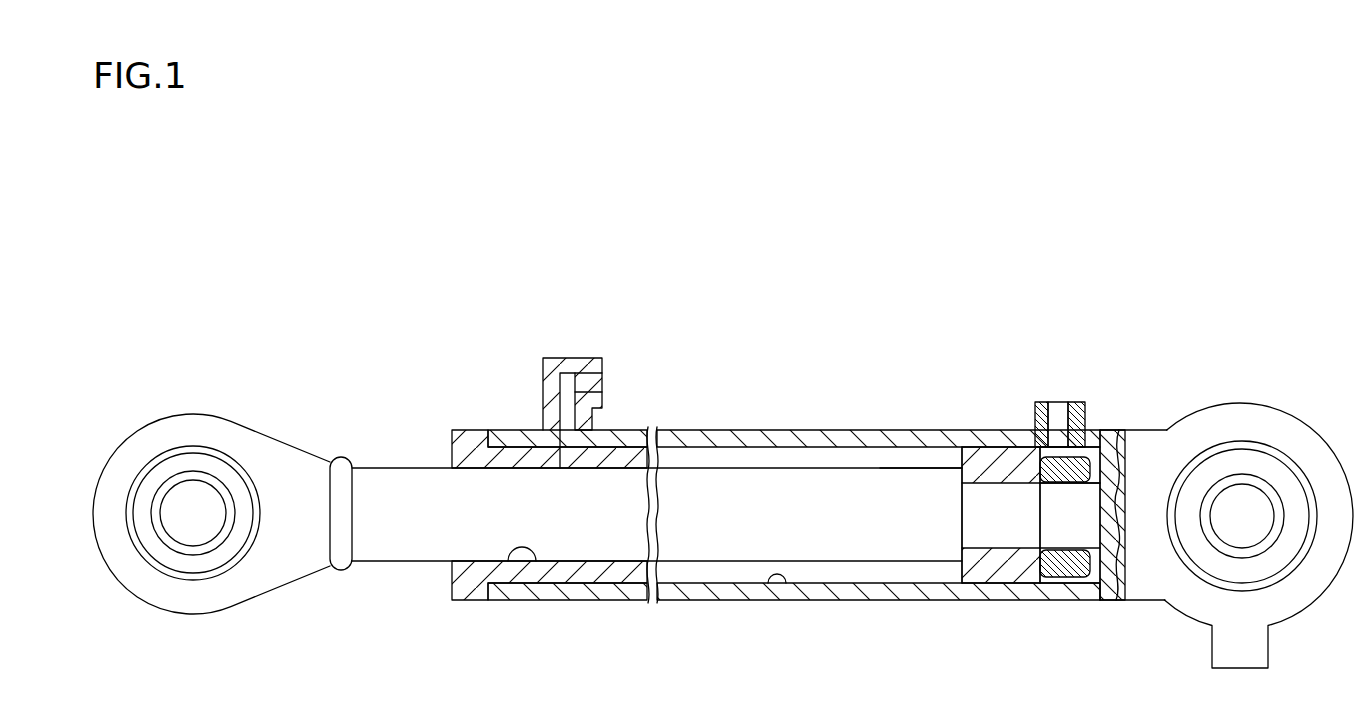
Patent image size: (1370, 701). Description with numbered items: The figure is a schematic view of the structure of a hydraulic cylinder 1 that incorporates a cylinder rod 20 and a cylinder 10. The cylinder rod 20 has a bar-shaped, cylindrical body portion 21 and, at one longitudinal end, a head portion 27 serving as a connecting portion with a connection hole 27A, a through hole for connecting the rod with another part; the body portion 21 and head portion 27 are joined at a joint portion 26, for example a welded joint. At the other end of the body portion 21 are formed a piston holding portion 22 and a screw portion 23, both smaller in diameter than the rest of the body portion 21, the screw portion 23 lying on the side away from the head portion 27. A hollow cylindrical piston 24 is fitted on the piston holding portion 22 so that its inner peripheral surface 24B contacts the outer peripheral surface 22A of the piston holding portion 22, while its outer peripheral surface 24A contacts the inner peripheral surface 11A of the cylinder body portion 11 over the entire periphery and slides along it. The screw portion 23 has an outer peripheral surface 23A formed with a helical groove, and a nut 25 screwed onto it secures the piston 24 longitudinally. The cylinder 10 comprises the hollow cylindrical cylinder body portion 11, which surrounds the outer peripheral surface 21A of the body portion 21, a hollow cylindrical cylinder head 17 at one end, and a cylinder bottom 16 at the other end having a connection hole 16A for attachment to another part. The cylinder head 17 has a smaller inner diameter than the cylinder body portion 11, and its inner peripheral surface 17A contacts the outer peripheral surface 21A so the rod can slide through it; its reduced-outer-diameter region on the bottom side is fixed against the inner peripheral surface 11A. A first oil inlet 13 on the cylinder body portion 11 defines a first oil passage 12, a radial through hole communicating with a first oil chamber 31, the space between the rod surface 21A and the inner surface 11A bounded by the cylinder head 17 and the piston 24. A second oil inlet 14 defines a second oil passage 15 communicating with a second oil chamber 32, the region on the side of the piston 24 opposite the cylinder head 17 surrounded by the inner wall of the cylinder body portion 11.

The hydraulic cylinder 1 is at (1182, 297).
The cylinder 10 is at (766, 418).
The cylinder body portion 11 is at (726, 444).
The inner peripheral surface of cylinder body portion 11A is at (786, 585).
The first oil passage 12 is at (604, 382).
The first oil inlet 13 is at (572, 370).
The second oil inlet 14 is at (1037, 418).
The second oil passage 15 is at (1060, 418).
The cylinder bottom 16 is at (1240, 418).
The connection hole 16A is at (1253, 505).
The cylinder head 17 is at (468, 586).
The inner peripheral surface of cylinder head 17A is at (537, 582).
The cylinder rod 20 is at (367, 440).
The body portion 21 is at (825, 490).
The outer peripheral surface of body portion 21A is at (903, 466).
The piston holding portion 22 is at (995, 500).
The outer peripheral surface of piston holding portion 22A is at (960, 478).
The screw portion 23 is at (1108, 440).
The outer peripheral surface of screw portion 23A is at (1114, 530).
The piston 24 is at (987, 590).
The outer peripheral surface of piston 24A is at (1028, 452).
The inner peripheral surface of piston 24B is at (1000, 546).
The nut 25 is at (1065, 512).
The joint portion 26 is at (343, 564).
The head portion 27 is at (193, 593).
The connection hole 27A is at (191, 500).
The first oil chamber 31 is at (695, 572).
The second oil chamber 32 is at (1122, 430).